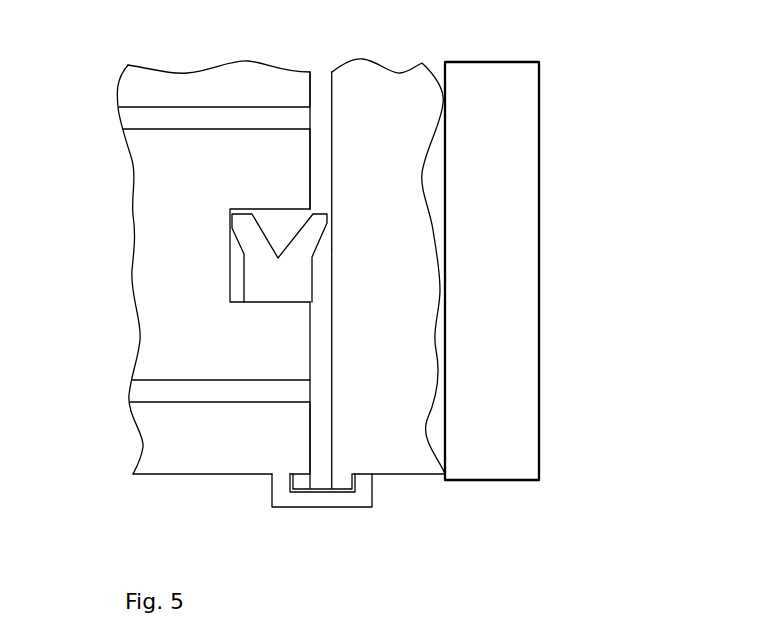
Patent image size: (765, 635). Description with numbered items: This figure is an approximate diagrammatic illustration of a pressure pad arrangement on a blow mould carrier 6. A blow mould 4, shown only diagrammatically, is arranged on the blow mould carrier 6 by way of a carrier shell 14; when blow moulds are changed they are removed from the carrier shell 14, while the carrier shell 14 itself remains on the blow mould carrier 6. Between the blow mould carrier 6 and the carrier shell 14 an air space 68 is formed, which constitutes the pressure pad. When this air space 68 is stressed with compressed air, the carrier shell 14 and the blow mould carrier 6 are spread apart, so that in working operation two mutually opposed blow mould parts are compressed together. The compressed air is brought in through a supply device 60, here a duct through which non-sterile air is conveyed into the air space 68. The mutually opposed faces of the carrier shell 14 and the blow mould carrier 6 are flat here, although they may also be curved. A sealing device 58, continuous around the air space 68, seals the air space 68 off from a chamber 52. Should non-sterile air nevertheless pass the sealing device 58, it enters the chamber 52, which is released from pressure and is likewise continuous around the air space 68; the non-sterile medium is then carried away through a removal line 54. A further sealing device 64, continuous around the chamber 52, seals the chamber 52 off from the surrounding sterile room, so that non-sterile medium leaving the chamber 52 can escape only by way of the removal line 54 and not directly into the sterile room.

The blow mould 4 is at (478, 400).
The blow mould carrier 6 is at (170, 190).
The carrier shell 14 is at (375, 448).
The chamber 52 is at (328, 315).
The removal line 54 is at (187, 395).
The sealing device 58 is at (305, 254).
The supply device 60 is at (260, 118).
The further sealing device 64 is at (298, 497).
The air space 68 is at (322, 167).